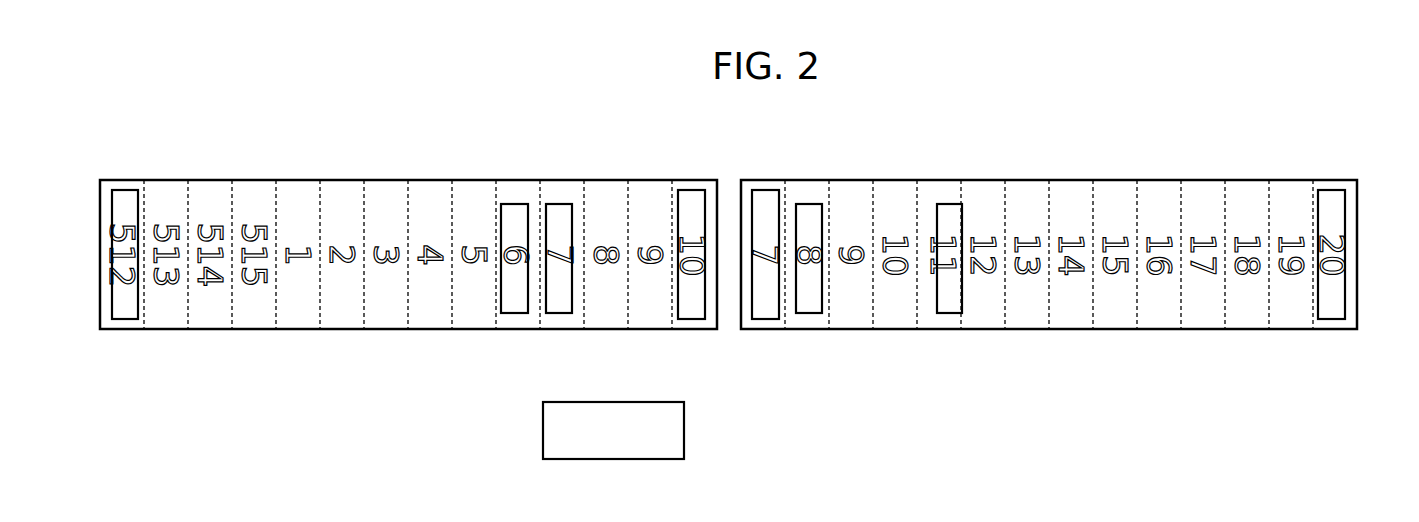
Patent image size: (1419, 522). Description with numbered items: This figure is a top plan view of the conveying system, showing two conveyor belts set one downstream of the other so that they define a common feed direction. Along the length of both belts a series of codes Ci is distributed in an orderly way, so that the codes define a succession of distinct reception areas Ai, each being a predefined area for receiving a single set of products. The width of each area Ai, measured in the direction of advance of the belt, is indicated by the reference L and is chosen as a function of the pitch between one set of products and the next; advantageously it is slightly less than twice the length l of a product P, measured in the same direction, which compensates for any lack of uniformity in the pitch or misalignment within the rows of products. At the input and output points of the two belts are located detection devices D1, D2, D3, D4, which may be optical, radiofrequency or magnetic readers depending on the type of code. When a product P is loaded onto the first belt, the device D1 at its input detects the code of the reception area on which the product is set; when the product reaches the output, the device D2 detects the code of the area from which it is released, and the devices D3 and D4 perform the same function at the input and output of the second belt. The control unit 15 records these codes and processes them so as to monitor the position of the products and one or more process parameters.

The detection device D1 is at (126, 200).
The detection device D2 is at (692, 202).
The detection device D3 is at (765, 202).
The detection device D4 is at (1330, 202).
The product P is at (576, 225).
The reception area Ai is at (290, 190).
The code Ci is at (260, 287).
The control unit 15 is at (563, 430).
The width of the area L is at (829, 329).
The length of the products l is at (937, 329).